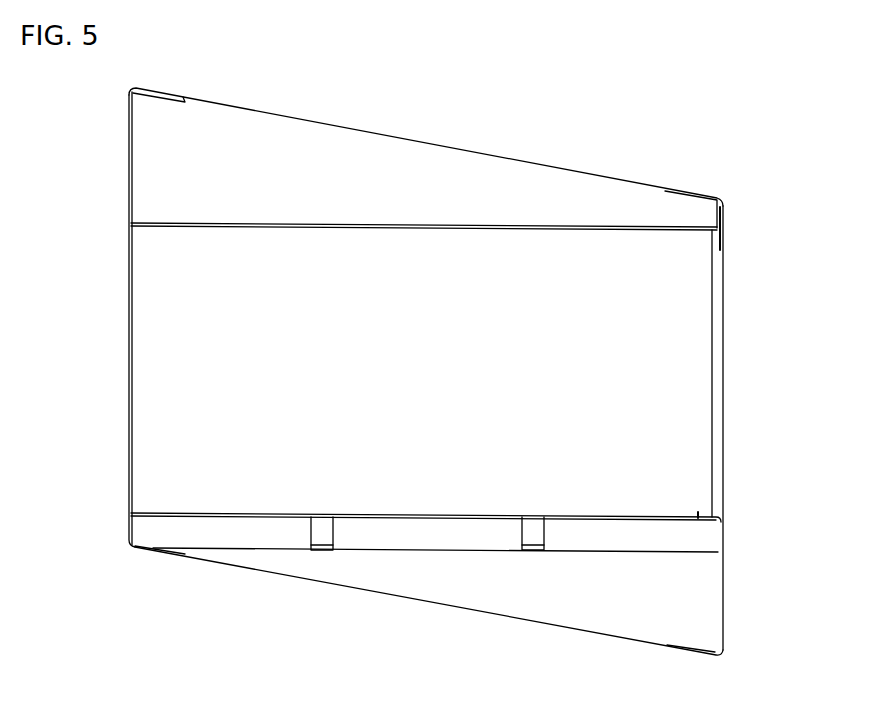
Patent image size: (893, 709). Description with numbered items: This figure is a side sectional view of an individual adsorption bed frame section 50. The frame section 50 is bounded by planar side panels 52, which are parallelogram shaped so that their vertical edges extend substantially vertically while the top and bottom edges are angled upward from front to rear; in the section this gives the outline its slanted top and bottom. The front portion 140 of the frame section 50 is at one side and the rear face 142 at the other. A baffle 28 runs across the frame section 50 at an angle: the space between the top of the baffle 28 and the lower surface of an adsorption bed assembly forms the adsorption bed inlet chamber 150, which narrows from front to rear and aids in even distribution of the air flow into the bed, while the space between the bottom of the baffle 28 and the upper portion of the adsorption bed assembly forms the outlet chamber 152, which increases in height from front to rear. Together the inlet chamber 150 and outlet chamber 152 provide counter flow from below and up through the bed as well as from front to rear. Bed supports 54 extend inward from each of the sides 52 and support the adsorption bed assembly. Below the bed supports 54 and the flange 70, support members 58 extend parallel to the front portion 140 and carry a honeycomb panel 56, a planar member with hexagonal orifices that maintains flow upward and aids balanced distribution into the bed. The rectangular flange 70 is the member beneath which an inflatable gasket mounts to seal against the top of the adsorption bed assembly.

The frame section 50 is at (710, 162).
The baffle 28 is at (413, 138).
The outlet chamber 152 is at (297, 143).
The flange 70 is at (437, 229).
The front portion 140 is at (723, 340).
The rear face 142 is at (130, 390).
The side panel 52 is at (352, 340).
The bed support 54 is at (615, 518).
The honeycomb panel 56 is at (158, 532).
The support member 58 is at (322, 538).
The adsorption bed inlet chamber 150 is at (698, 598).